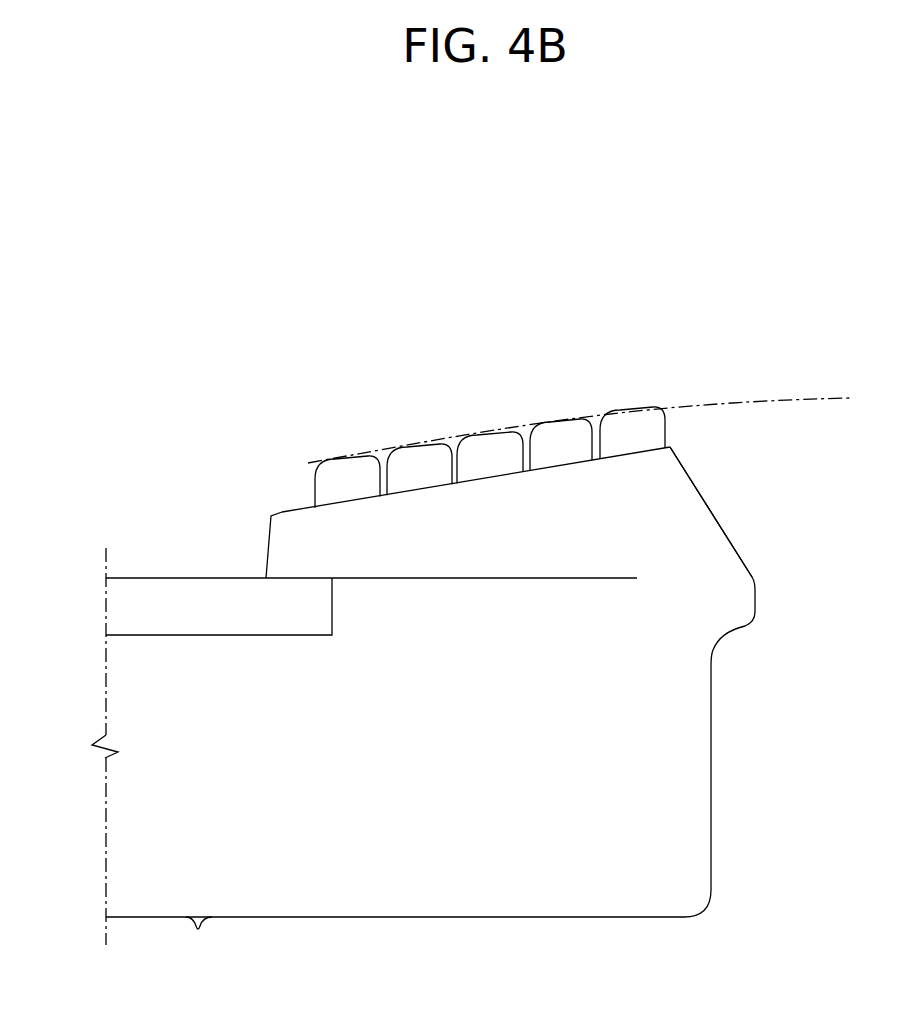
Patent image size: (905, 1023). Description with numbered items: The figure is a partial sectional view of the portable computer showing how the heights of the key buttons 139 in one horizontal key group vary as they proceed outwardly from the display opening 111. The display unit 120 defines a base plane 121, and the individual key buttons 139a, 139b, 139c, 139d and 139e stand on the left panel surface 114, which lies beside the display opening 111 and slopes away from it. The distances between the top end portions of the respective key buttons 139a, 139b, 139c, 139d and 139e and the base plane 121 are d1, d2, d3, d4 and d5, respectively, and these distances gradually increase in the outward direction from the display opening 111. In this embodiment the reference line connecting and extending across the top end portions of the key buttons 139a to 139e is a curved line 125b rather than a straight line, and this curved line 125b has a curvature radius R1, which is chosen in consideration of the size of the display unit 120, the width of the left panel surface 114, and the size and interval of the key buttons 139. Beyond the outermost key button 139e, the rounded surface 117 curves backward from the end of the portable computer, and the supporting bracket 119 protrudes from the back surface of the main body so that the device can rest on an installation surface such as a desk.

The display opening 111 is at (266, 535).
The left panel surface 114 is at (290, 508).
The rounded surface 117 is at (710, 502).
The supporting bracket 119 is at (199, 932).
The display unit 120 is at (128, 593).
The base plane 121 is at (190, 577).
The curved line 125b is at (600, 408).
The key buttons 139 is at (489, 414).
The key button 139a is at (343, 457).
The key button 139b is at (413, 443).
The key button 139c is at (483, 432).
The key button 139d is at (555, 416).
The key button 139e is at (629, 397).
The distance d1 is at (344, 462).
The distance d2 is at (415, 450).
The distance d3 is at (487, 438).
The distance d4 is at (558, 425).
The distance d5 is at (628, 413).
The curvature radius R1 is at (808, 400).